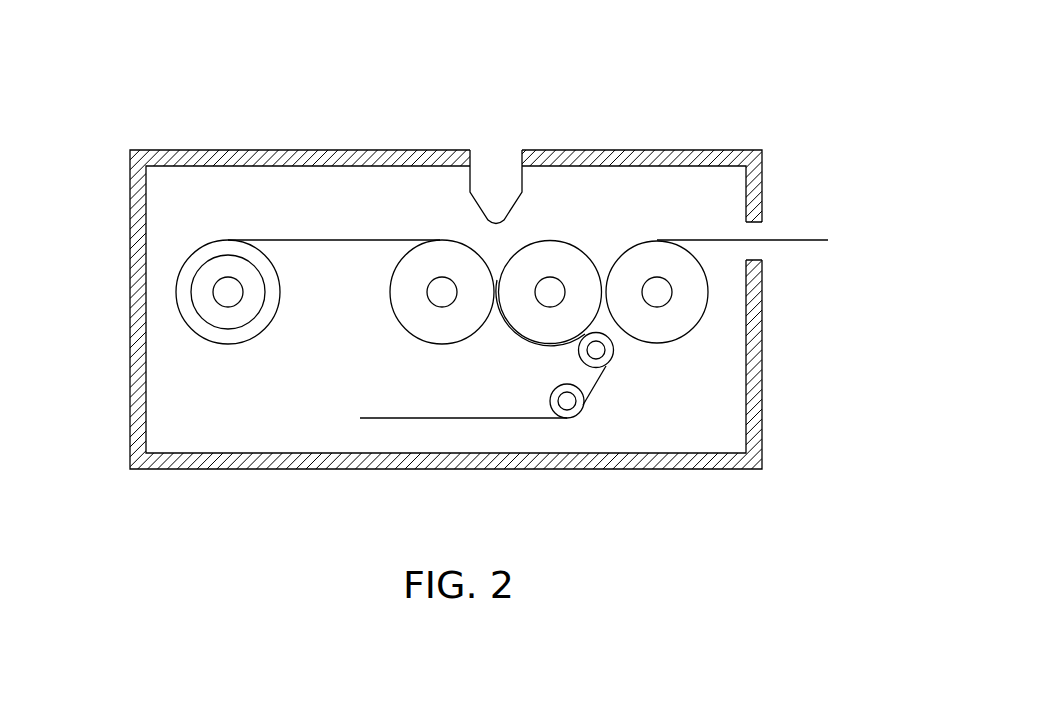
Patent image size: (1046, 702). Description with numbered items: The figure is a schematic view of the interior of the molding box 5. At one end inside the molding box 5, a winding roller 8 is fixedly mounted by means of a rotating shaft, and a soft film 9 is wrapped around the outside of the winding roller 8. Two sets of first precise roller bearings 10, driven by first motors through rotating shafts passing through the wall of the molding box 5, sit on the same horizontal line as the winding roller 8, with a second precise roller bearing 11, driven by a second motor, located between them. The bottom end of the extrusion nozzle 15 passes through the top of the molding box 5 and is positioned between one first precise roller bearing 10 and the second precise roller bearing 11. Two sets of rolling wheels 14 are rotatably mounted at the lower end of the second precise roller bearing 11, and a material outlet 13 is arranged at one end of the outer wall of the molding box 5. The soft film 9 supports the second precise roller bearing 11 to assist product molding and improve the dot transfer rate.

The molding box 5 is at (132, 387).
The winding roller 8 is at (213, 297).
The soft film 9 is at (226, 247).
The first precise roller bearing 10 is at (413, 275).
The second precise roller bearing 11 is at (545, 258).
The material outlet 13 is at (760, 242).
The rolling wheel 14 is at (583, 407).
The extrusion nozzle 15 is at (502, 182).